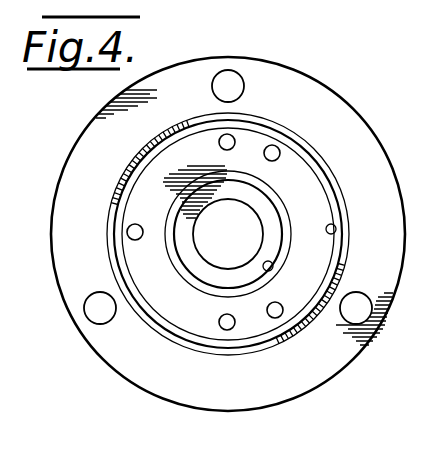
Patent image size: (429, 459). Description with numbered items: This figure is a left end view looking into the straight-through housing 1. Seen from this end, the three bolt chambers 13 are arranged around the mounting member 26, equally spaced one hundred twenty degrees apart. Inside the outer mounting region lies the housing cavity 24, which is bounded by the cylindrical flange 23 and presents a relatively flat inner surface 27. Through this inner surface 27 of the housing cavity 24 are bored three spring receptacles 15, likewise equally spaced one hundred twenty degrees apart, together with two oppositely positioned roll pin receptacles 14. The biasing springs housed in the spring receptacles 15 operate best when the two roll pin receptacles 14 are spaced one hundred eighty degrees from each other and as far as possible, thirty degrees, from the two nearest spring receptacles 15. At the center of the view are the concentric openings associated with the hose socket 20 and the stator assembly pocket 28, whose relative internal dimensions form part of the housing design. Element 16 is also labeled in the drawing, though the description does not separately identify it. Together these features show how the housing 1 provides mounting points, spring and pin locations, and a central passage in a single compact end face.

The straight-through housing 1 is at (332, 84).
The bolt chambers 13 is at (228, 72).
The roll pin receptacles 14 is at (219, 143).
The spring receptacles 15 is at (272, 153).
The flange 16 is at (185, 385).
The hose socket 20 is at (228, 233).
The cylindrical flange 23 is at (275, 344).
The housing cavity 24 is at (333, 222).
The mounting member 26 is at (245, 410).
The inner surface 27 is at (316, 197).
The stator assembly pocket 28 is at (269, 269).